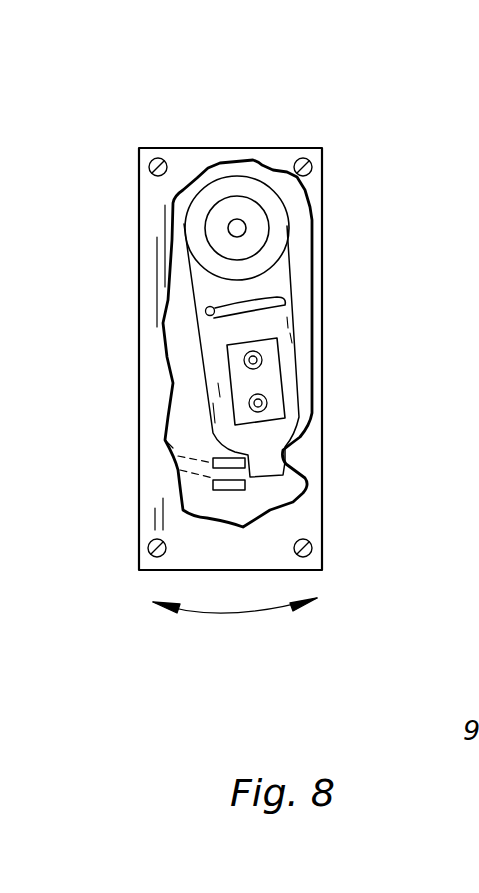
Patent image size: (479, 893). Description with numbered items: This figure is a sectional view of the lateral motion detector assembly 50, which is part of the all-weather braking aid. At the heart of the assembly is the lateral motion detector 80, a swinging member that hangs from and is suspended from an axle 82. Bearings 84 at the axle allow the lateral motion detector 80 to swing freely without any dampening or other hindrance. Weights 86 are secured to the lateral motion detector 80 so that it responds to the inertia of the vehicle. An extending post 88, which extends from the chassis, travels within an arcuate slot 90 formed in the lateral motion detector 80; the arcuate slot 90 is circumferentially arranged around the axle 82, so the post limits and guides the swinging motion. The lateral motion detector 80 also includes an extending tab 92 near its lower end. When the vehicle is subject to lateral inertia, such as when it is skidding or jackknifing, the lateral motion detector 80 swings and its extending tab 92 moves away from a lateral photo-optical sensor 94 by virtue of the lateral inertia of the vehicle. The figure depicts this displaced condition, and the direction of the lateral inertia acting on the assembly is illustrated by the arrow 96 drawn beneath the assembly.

The lateral motion detector assembly 50 is at (372, 386).
The lateral motion detector 80 is at (205, 343).
The axle 82 is at (237, 228).
The bearings 84 is at (222, 185).
The weights 86 is at (277, 378).
The extending post 88 is at (207, 308).
The arcuate slot 90 is at (272, 292).
The extending tab 92 is at (285, 462).
The lateral photo-optical sensor 94 is at (213, 482).
The arrow 96 is at (227, 613).